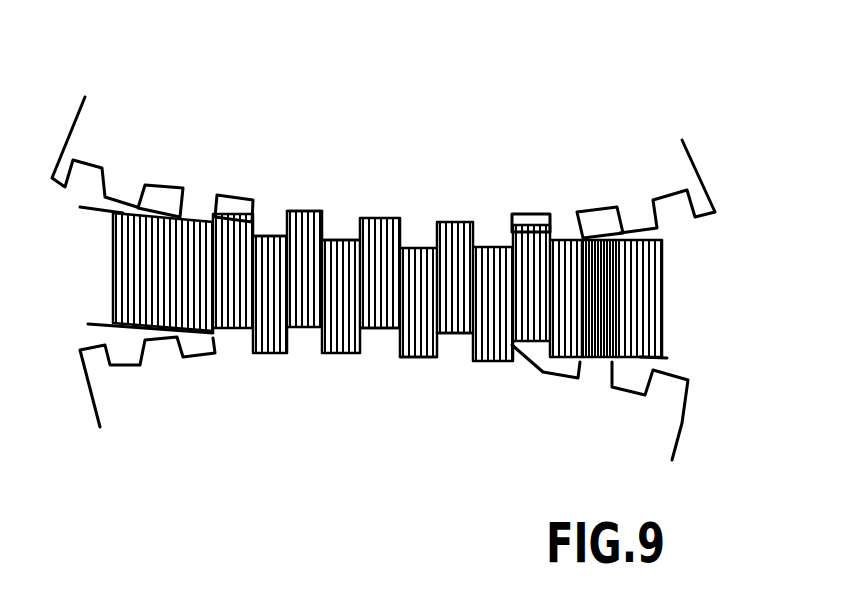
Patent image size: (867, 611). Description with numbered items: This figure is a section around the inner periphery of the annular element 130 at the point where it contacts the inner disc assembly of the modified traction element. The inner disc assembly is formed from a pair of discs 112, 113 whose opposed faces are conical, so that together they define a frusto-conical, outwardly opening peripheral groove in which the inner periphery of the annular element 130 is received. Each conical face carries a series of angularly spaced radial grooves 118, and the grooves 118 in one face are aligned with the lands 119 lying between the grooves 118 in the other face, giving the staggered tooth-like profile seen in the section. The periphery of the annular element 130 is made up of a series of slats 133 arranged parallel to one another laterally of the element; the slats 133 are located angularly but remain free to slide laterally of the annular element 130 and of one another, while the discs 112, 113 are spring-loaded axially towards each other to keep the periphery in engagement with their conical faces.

The disc 112 is at (675, 172).
The disc 113 is at (667, 425).
The radial grooves 118 is at (158, 193).
The lands 119 is at (343, 237).
The annular element 130 is at (660, 285).
The slats 133 is at (590, 358).